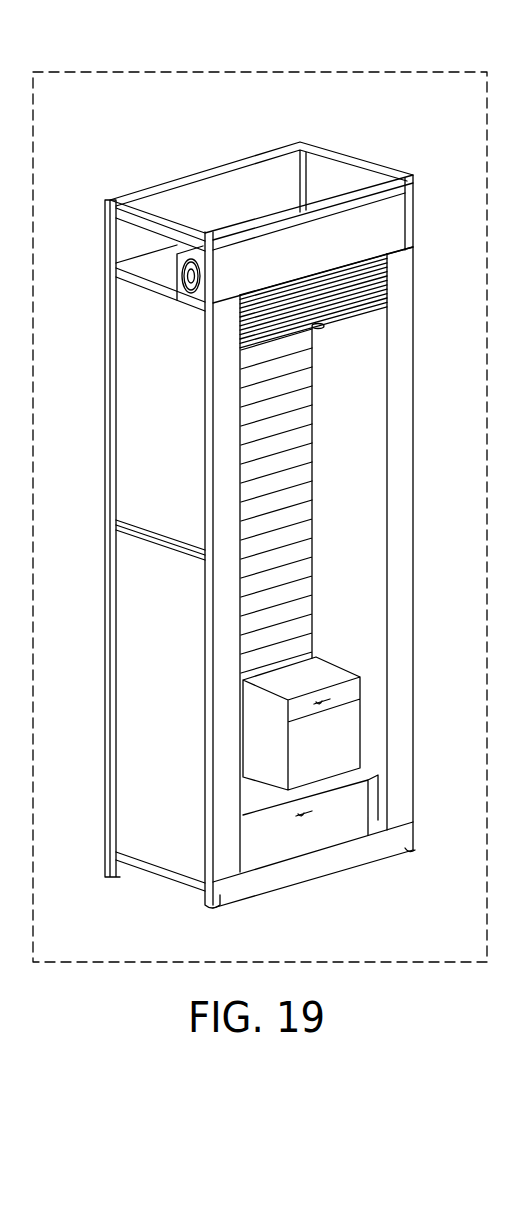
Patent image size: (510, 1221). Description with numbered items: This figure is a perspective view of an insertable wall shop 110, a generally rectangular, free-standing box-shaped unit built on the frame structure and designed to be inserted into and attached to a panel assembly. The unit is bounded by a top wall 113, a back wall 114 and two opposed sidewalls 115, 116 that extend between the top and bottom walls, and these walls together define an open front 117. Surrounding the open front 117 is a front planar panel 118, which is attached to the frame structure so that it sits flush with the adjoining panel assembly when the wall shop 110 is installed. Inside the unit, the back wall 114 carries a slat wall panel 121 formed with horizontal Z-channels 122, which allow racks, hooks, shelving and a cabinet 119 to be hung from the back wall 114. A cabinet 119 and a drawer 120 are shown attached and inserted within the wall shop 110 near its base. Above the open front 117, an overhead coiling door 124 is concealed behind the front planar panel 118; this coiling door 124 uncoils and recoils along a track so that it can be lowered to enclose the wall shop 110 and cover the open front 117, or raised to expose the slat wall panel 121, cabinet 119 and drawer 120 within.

The insertable wall shop 110 is at (210, 70).
The top wall 113 is at (145, 272).
The back wall 114 is at (104, 378).
The sidewall 115 is at (360, 462).
The sidewall 116 is at (143, 595).
The open front 117 is at (372, 396).
The front planar panel 118 is at (390, 211).
The cabinet 119 is at (350, 738).
The drawer 120 is at (298, 830).
The slat wall panel 121 is at (290, 537).
The horizontal Z-channels 122 is at (310, 572).
The overhead coiling door 124 is at (176, 284).